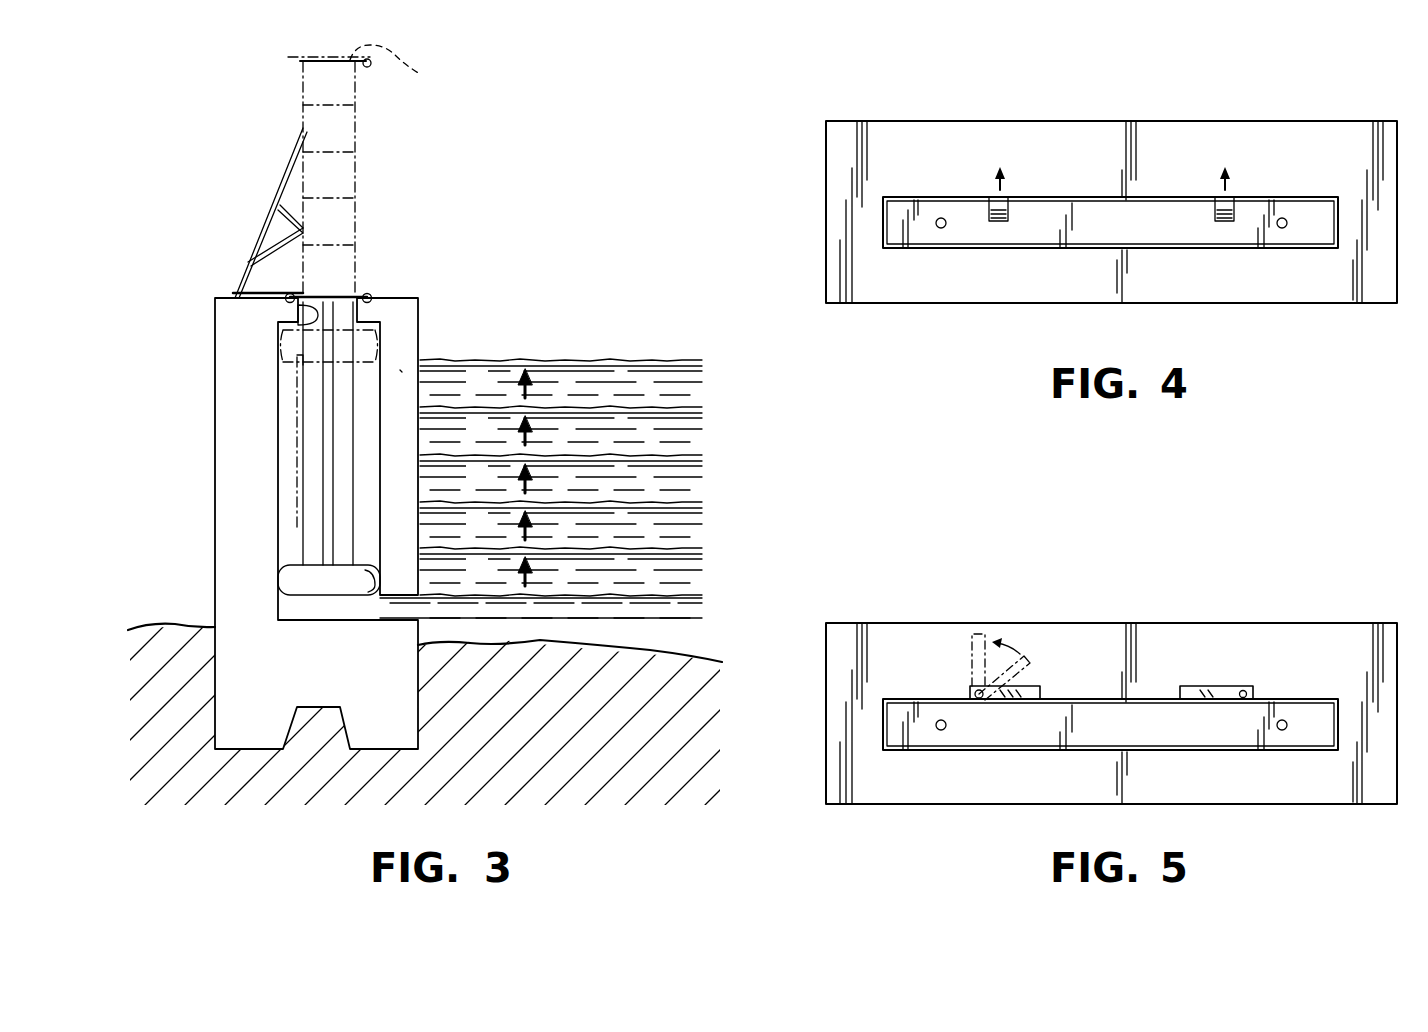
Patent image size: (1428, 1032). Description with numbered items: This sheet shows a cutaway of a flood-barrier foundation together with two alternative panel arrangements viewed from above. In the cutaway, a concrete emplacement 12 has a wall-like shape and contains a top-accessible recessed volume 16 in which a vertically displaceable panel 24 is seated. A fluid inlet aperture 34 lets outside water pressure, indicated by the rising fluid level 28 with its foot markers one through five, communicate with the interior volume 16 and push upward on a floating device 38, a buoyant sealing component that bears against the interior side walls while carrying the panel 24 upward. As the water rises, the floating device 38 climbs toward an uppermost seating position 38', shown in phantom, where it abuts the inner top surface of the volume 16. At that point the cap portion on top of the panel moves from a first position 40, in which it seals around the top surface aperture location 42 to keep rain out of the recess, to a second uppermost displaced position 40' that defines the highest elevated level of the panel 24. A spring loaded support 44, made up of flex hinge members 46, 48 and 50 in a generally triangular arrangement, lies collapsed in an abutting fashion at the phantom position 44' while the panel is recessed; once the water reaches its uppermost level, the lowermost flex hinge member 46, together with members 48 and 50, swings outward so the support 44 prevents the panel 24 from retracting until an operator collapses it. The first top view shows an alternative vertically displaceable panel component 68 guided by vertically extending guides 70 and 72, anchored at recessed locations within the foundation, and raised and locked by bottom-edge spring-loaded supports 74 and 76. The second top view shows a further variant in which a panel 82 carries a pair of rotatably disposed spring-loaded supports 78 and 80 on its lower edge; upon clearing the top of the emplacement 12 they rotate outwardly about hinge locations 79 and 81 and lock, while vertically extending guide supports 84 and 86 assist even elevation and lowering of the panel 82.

In FIG. 3, the concrete emplacement 12 is at (242, 417).
In FIG. 3, the recessed volume 16 is at (370, 390).
In FIG. 3, the panel 24 is at (362, 175).
In FIG. 3, the fluid level 28 is at (612, 435).
In FIG. 3, the fluid inlet aperture 34 is at (407, 607).
In FIG. 3, the floating device 38 is at (267, 573).
In FIG. 3, the uppermost seating position 38' is at (460, 288).
In FIG. 3, the first position of cap portion 40 is at (372, 265).
In FIG. 3, the second uppermost displaced position 40' is at (408, 66).
In FIG. 3, the top surface aperture location 42 is at (305, 325).
In FIG. 3, the spring loaded support 44 is at (269, 191).
In FIG. 3, the collapsed support position 44' is at (226, 442).
In FIG. 3, the flex hinge member 46 is at (262, 292).
In FIG. 3, the flex hinge member 48 is at (282, 258).
In FIG. 3, the flex hinge member 50 is at (284, 216).
In FIG. 4, the vertically displaceable panel component 68 is at (1055, 212).
In FIG. 4, the vertically extending guide 70 is at (1282, 229).
In FIG. 4, the vertically extending guide 72 is at (942, 229).
In FIG. 4, the spring-loaded support 74 is at (1213, 197).
In FIG. 4, the spring-loaded support 76 is at (988, 197).
In FIG. 5, the rotatable spring-loaded support 78 is at (1188, 692).
In FIG. 5, the hinge location 79 is at (1245, 690).
In FIG. 5, the rotatable spring-loaded support 80 is at (1030, 693).
In FIG. 5, the hinge location 81 is at (979, 694).
In FIG. 5, the panel 82 is at (1016, 735).
In FIG. 5, the vertically extending guide support 84 is at (940, 720).
In FIG. 5, the vertically extending guide support 86 is at (1283, 720).